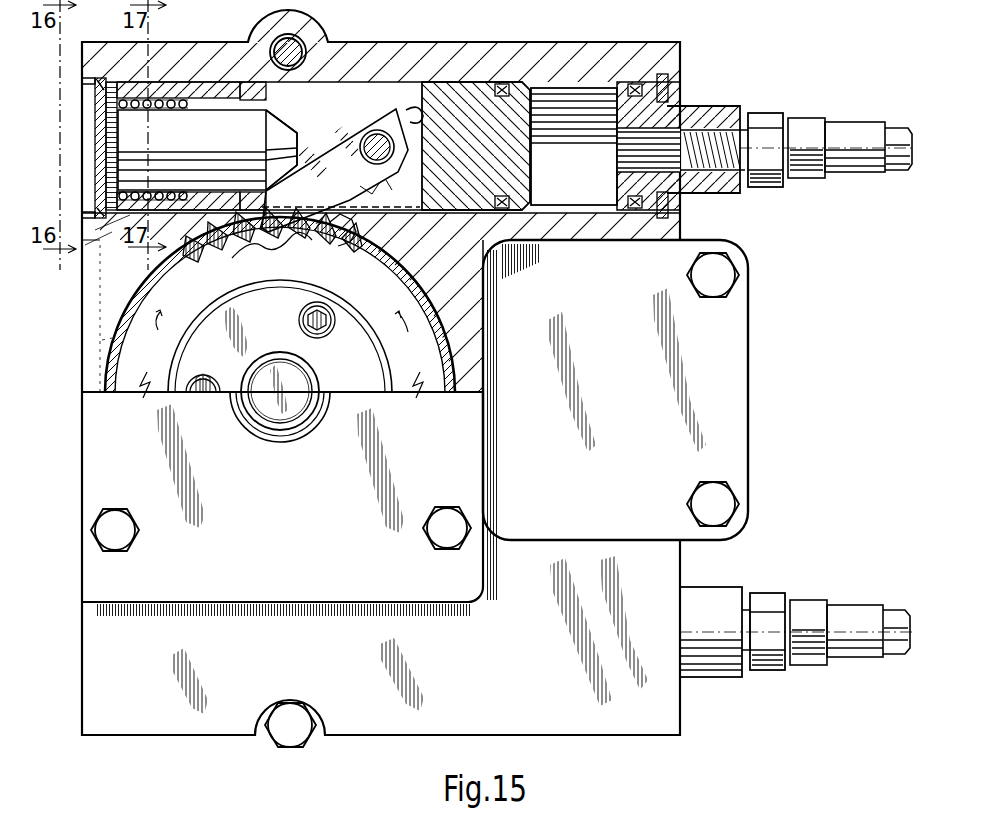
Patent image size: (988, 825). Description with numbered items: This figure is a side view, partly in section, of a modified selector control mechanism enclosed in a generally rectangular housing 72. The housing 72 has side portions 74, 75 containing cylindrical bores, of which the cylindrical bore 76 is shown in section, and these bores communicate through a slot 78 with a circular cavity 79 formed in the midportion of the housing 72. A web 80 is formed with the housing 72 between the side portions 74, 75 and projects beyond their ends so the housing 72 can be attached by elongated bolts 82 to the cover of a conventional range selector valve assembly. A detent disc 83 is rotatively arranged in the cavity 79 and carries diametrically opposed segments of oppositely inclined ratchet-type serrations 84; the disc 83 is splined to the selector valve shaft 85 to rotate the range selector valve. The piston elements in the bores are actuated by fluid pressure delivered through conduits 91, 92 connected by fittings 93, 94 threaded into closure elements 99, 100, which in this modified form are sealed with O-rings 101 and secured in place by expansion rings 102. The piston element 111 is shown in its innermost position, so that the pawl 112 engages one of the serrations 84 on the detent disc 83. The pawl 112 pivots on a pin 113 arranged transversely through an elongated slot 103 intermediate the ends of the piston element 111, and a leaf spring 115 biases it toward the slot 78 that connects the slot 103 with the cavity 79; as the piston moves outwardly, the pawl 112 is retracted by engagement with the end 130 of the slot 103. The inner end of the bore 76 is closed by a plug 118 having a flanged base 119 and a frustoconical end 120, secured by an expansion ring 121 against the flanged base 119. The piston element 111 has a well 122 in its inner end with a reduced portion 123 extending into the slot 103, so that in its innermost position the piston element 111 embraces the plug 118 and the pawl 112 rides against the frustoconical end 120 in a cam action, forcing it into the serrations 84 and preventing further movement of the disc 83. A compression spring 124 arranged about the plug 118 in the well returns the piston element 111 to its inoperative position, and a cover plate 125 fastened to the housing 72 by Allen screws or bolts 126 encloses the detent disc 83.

The housing 72 is at (500, 42).
The side portion 74 is at (418, 42).
The side portion 75 is at (158, 736).
The cylindrical bore 76 is at (570, 86).
The slot 78 is at (318, 228).
The circular cavity 79 is at (110, 340).
The web 80 is at (732, 364).
The elongated bolt 82 is at (300, 716).
The detent disc 83 is at (196, 300).
The ratchet-type serrations 84 is at (252, 232).
The selector valve shaft 85 is at (296, 380).
The conduit 91 is at (896, 126).
The conduit 92 is at (894, 612).
The fitting 93 is at (770, 118).
The fitting 94 is at (762, 604).
The closure element 99 is at (705, 108).
The closure element 100 is at (710, 600).
The O-ring 101 is at (636, 84).
The expansion ring 102 is at (672, 76).
The elongated slot 103 is at (340, 52).
The piston element 111 is at (455, 92).
The pawl 112 is at (330, 145).
The pin 113 is at (378, 128).
The leaf spring 115 is at (412, 118).
The plug 118 is at (200, 149).
The flanged base 119 is at (108, 142).
The frustoconical end 120 is at (282, 128).
The expansion ring 121 is at (88, 82).
The well 122 is at (162, 82).
The reduced portion 123 is at (202, 102).
The compression spring 124 is at (118, 104).
The cover plate 125 is at (302, 562).
The Allen screws or bolts 126 is at (440, 546).
The end 130 is at (346, 240).